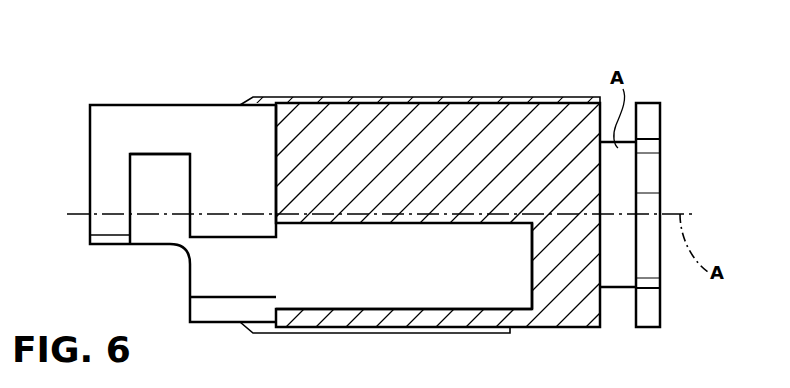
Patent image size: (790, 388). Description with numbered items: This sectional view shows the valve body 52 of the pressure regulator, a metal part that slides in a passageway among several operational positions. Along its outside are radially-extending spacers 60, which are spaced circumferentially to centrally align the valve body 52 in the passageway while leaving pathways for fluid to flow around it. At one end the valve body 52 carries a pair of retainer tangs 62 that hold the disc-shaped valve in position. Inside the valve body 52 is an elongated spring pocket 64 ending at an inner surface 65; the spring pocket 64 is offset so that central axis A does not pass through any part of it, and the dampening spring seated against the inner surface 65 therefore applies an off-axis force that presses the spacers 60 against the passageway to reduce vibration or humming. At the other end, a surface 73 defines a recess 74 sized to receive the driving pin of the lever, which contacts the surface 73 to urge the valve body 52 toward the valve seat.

The valve body 52 is at (566, 84).
The radially-extending spacers 60 is at (266, 100).
The retainer tangs 62 is at (648, 169).
The spring pocket 64 is at (402, 310).
The inner surface 65 is at (531, 280).
The surface 73 is at (135, 174).
The recess 74 is at (140, 196).